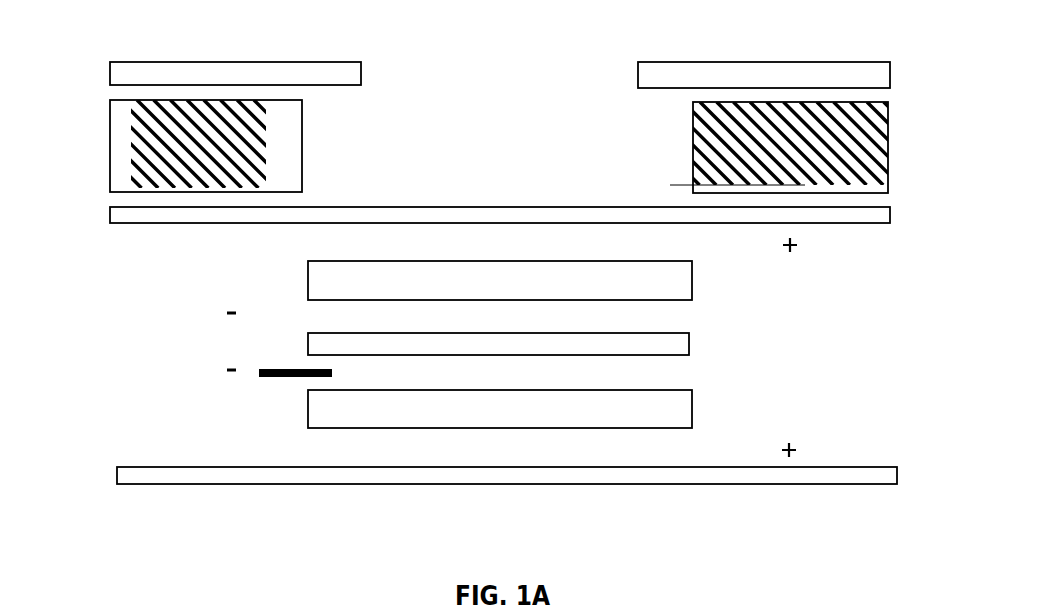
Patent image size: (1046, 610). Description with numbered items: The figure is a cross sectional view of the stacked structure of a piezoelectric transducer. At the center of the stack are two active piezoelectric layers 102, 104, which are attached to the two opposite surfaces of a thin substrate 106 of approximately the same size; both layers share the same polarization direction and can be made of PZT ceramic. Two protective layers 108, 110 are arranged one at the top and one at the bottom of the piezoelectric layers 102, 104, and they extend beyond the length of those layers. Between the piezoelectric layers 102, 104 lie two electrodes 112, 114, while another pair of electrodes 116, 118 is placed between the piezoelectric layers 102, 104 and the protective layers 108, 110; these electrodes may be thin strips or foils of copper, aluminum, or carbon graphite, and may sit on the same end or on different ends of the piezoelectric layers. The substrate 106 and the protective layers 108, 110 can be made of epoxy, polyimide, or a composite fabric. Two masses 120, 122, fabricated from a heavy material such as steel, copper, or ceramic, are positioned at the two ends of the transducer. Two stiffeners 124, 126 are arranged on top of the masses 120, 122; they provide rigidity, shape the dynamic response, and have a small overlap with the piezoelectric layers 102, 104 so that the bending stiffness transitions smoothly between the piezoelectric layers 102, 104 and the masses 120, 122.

The active piezoelectric layer 102 is at (476, 278).
The active piezoelectric layer 104 is at (482, 418).
The thin substrate 106 is at (690, 334).
The protective layer 108 is at (402, 213).
The protective layer 110 is at (287, 475).
The electrode 112 is at (294, 314).
The electrode 114 is at (288, 377).
The electrode 116 is at (706, 241).
The electrode 118 is at (710, 448).
The mass 120 is at (122, 160).
The mass 122 is at (883, 162).
The stiffener 124 is at (304, 77).
The stiffener 126 is at (707, 80).